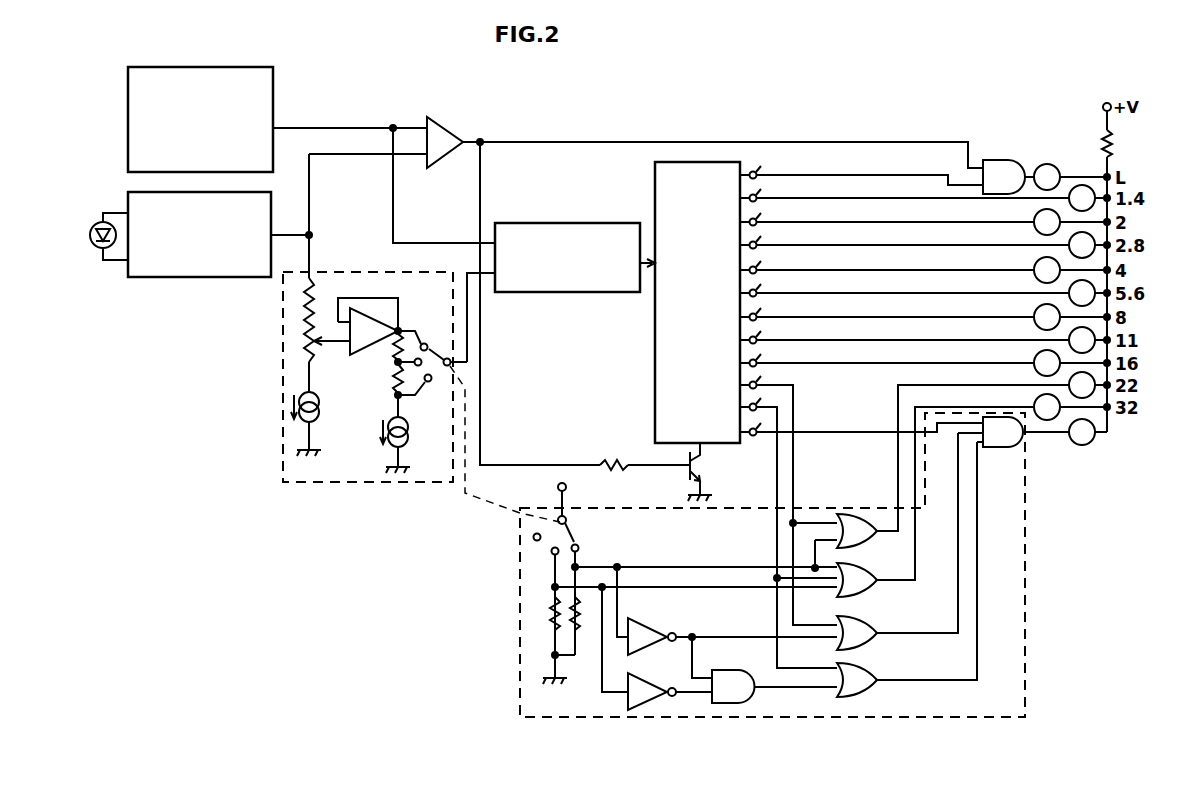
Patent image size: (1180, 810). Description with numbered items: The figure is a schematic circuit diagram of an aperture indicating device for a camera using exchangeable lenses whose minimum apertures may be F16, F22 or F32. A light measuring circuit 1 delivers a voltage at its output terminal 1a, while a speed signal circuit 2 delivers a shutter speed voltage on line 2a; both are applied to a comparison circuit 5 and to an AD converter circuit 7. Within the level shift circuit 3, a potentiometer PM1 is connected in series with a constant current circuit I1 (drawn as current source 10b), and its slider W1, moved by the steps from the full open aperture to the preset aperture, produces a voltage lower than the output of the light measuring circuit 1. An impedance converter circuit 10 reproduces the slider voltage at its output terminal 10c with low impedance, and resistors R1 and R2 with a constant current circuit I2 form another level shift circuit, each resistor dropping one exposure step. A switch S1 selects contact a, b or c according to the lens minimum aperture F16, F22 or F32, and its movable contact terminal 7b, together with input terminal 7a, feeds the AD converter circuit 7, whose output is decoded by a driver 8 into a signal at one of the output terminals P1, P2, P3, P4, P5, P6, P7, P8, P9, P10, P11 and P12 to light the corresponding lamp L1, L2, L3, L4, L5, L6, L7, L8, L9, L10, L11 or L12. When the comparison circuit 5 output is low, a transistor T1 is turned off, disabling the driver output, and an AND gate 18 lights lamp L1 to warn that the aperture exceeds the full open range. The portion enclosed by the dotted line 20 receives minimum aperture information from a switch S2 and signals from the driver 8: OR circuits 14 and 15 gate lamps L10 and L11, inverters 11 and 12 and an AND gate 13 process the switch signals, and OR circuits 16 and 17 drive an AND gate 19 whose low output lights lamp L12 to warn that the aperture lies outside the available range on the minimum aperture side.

The light measuring circuit 1 is at (205, 278).
The output terminal of the light measuring circuit 1a is at (292, 233).
The speed signal circuit 2 is at (180, 67).
The output line of the speed signal circuit 2a is at (292, 128).
The level shift circuit 3 is at (345, 482).
The comparison circuit 5 is at (455, 120).
The AD converter circuit 7 is at (540, 223).
The input terminal of the AD converter circuit 7a is at (448, 241).
The movable contact terminal of switch S1 7b is at (470, 273).
The driver 8 is at (655, 198).
The impedance converter circuit 10 is at (354, 345).
The constant current circuit 10b is at (325, 424).
The output terminal of the impedance converter circuit 10c is at (400, 325).
The inverter 11 is at (638, 622).
The inverter 12 is at (650, 712).
The AND gate 13 is at (737, 705).
The OR circuit 14 is at (844, 514).
The OR circuit 15 is at (858, 568).
The OR circuit 16 is at (858, 621).
The OR circuit 17 is at (858, 668).
The AND gate 18 is at (1002, 160).
The AND gate 19 is at (1003, 449).
The range detecting circuit 20 is at (822, 718).
The slider W1 is at (328, 335).
The potentiometer PM1 is at (302, 326).
The resistor R1 is at (382, 347).
The resistor R2 is at (380, 378).
The constant current circuit I1 is at (298, 396).
The constant current circuit I2 is at (406, 418).
The switch S1 is at (452, 360).
The switch S2 is at (572, 530).
The transistor T1 is at (704, 468).
The minimum diaphragm aperture F16 is at (629, 520).
The minimum diaphragm aperture F22 is at (631, 523).
The minimum diaphragm aperture F32 is at (469, 434).
The output terminal P1 is at (861, 171).
The output terminal P2 is at (904, 191).
The output terminal P3 is at (887, 215).
The output terminal P4 is at (904, 238).
The output terminal P5 is at (887, 263).
The output terminal P6 is at (904, 286).
The output terminal P7 is at (887, 310).
The output terminal P8 is at (904, 333).
The output terminal P9 is at (887, 356).
The output terminal P10 is at (788, 496).
The output terminal P11 is at (788, 528).
The output terminal P12 is at (861, 441).
The lamp L1 is at (1072, 177).
The lamp L2 is at (1089, 198).
The lamp L3 is at (1072, 222).
The lamp L4 is at (1089, 245).
The lamp L5 is at (1072, 270).
The lamp L6 is at (1089, 293).
The lamp L7 is at (1072, 317).
The lamp L8 is at (1089, 340).
The lamp L9 is at (1072, 363).
The light emitting diode L10 is at (993, 451).
The light emitting diode L11 is at (993, 487).
The light emitting diode L12 is at (1088, 432).